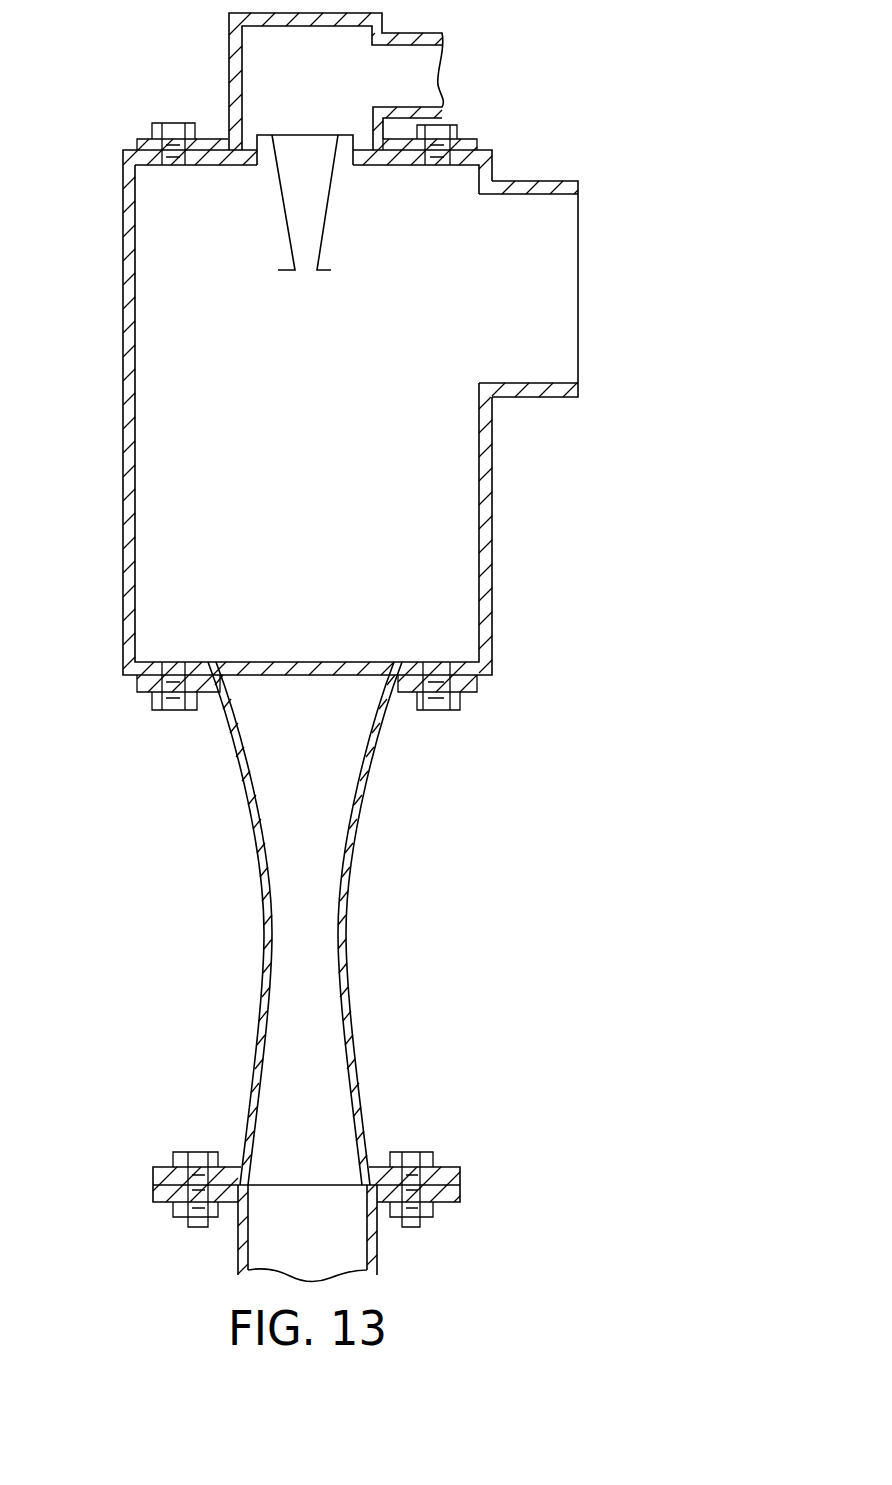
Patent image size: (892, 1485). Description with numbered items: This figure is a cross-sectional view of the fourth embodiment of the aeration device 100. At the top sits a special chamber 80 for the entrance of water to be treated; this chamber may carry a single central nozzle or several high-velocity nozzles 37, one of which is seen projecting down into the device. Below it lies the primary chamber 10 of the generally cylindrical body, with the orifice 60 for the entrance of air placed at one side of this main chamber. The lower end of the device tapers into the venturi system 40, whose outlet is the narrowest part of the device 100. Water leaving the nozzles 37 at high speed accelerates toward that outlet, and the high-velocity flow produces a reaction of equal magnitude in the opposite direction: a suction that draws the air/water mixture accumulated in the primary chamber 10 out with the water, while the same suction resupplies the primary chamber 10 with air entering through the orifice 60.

The primary chamber 10 is at (325, 458).
The high-velocity nozzles 37 is at (328, 213).
The venturi system 40 is at (323, 965).
The orifice 60 is at (578, 285).
The special chamber 80 is at (278, 65).
The aeration device 100 is at (537, 576).